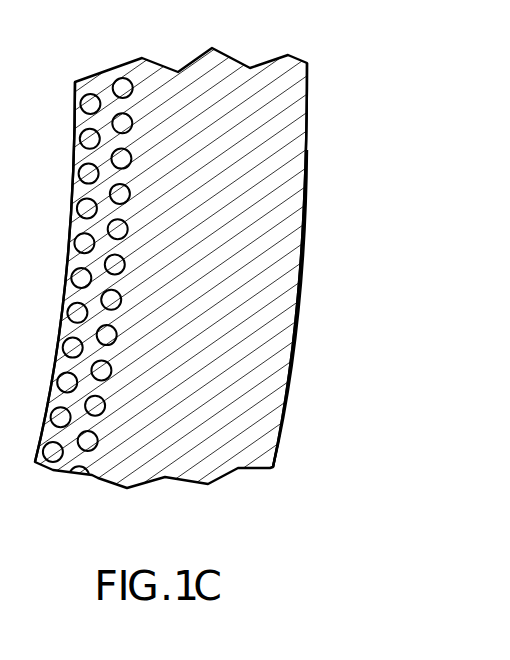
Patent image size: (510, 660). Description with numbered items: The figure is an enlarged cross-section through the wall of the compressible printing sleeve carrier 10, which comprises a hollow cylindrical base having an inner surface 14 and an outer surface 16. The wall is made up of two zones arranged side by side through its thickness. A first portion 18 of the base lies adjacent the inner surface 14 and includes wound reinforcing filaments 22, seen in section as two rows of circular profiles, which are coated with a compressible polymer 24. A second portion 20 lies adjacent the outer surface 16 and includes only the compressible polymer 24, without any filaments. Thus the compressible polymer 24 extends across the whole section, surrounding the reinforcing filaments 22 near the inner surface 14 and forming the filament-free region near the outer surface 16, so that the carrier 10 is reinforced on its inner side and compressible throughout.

The compressible printing sleeve carrier 10 is at (189, 268).
The inner surface 14 is at (73, 162).
The outer surface 16 is at (308, 148).
The first portion 18 is at (25, 478).
The second portion 20 is at (268, 495).
The wound reinforcing filaments 22 is at (71, 274).
The compressible polymer 24 is at (298, 280).